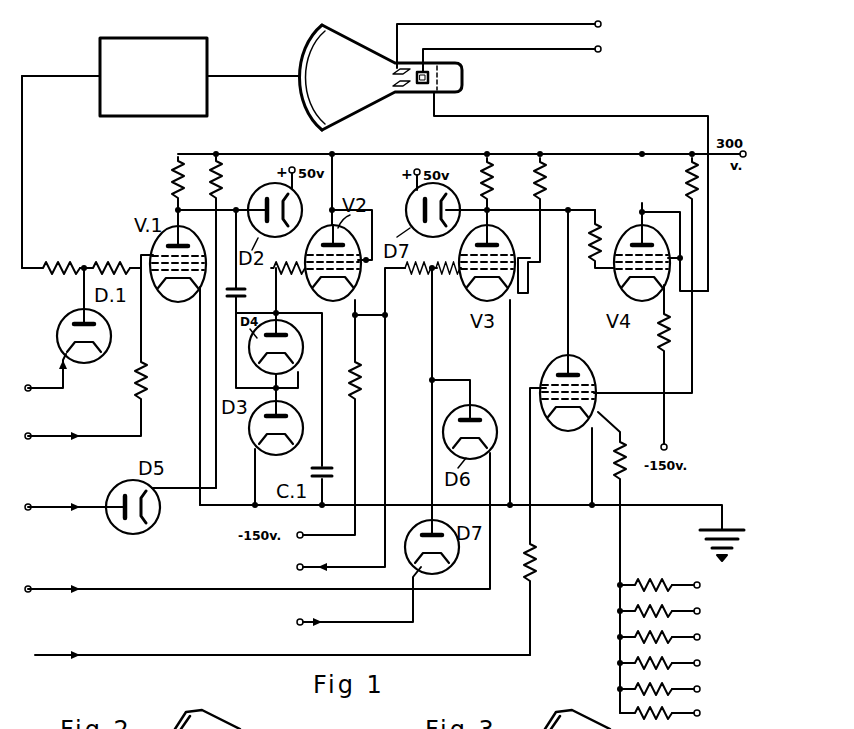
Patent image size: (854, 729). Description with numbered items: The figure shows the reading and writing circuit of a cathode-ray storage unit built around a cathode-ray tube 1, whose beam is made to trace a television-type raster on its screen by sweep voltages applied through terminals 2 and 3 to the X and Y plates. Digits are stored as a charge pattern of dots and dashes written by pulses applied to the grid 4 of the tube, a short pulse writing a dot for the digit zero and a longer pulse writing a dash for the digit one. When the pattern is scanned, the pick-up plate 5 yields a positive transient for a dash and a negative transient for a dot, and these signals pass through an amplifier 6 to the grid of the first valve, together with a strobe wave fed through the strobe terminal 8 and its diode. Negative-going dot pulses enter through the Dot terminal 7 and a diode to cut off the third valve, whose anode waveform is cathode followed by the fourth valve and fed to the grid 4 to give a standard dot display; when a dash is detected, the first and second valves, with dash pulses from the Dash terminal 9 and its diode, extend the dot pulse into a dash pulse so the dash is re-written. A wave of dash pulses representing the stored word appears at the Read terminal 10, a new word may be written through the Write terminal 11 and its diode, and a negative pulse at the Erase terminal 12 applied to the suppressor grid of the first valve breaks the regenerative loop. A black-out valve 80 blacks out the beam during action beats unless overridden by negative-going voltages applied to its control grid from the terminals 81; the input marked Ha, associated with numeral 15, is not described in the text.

The cathode-ray tube 1 is at (364, 34).
The X-plate terminal 2 is at (520, 55).
The Y-plate terminal 3 is at (507, 38).
The grid 4 is at (440, 88).
The pick-up plate 5 is at (302, 62).
The amplifier 6 is at (207, 62).
The dot input terminal 7 is at (255, 531).
The strobe terminal 8 is at (46, 380).
The Dash terminal 9 is at (72, 504).
The Read terminal 10 is at (313, 445).
The Write terminal 11 is at (326, 598).
The Erase terminal 12 is at (83, 363).
The Ha input terminal 15 is at (276, 653).
The black-out valve 80 is at (596, 376).
The terminals 81 is at (700, 587).